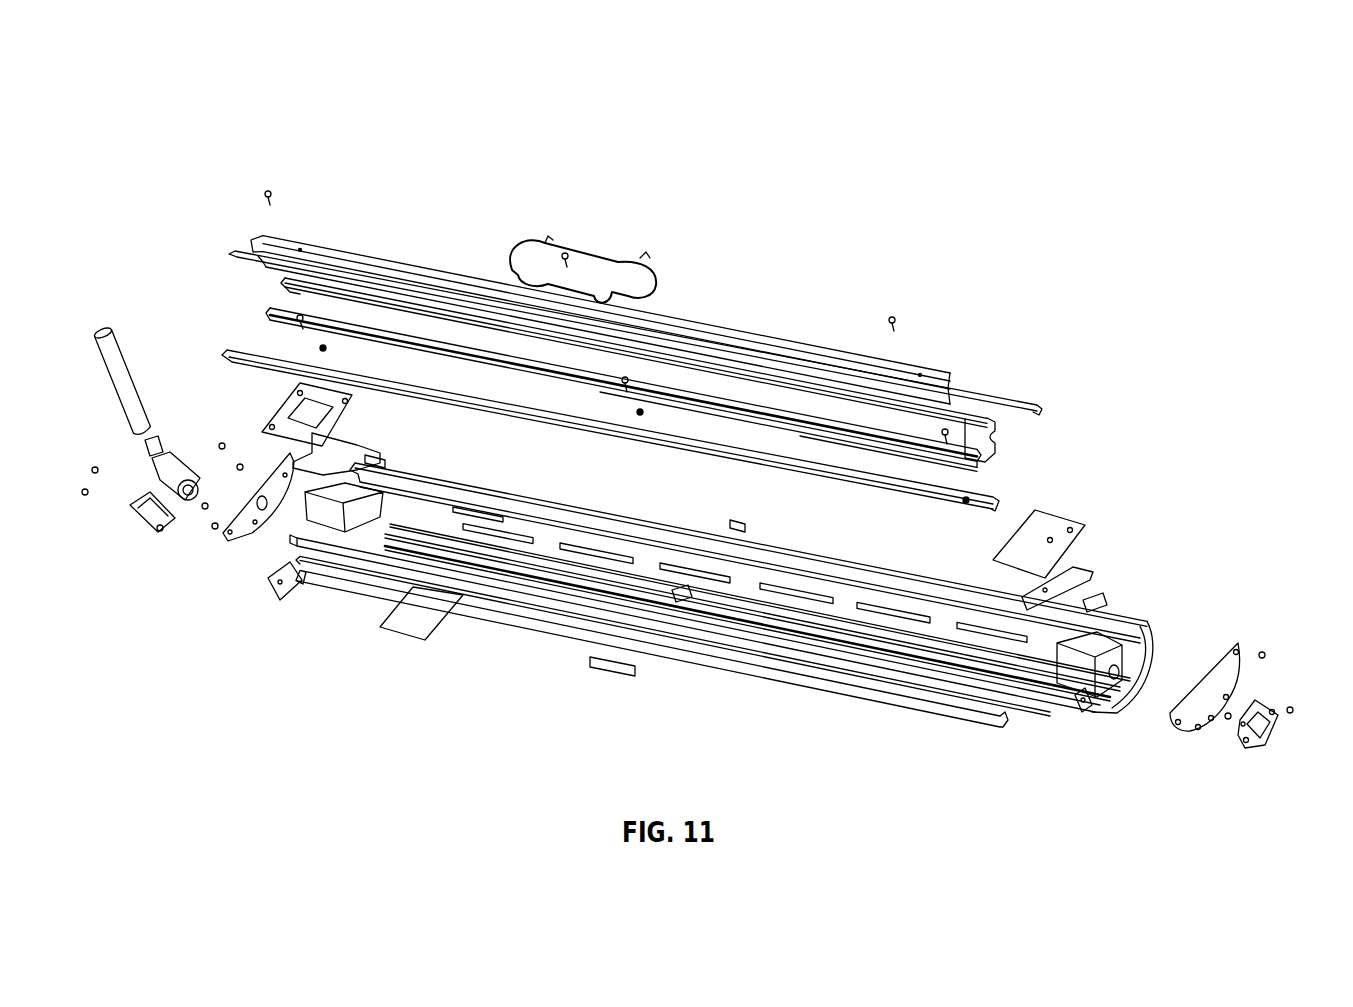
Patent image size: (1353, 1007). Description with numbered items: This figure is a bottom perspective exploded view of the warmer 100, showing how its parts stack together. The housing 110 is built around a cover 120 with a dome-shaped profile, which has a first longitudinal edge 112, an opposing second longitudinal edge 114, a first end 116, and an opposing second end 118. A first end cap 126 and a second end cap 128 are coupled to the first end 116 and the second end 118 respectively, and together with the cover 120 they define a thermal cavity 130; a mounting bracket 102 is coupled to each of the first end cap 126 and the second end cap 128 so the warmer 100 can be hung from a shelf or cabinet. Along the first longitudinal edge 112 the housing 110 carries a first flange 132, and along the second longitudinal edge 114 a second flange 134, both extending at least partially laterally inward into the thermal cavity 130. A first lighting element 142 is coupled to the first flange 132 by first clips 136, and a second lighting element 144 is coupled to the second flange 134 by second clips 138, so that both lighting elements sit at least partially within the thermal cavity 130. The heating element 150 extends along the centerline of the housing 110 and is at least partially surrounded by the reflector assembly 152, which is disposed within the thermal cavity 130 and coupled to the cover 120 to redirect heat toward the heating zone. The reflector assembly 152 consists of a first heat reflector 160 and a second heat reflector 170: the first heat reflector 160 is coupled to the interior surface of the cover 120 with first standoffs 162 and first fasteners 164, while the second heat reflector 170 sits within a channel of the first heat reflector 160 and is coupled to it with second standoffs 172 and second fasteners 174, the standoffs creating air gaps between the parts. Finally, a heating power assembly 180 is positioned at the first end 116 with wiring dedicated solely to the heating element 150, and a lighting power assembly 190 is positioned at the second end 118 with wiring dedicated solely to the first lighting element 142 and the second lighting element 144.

The warmer 100 is at (212, 82).
The mounting bracket 102 is at (142, 518).
The housing 110 is at (689, 606).
The first longitudinal edge 112 is at (689, 606).
The second longitudinal edge 114 is at (560, 616).
The first end 116 is at (205, 555).
The second end 118 is at (1128, 712).
The cover 120 is at (458, 514).
The first end cap 126 is at (240, 546).
The second end cap 128 is at (1232, 664).
The thermal cavity 130 is at (848, 607).
The first flange 132 is at (786, 554).
The second flange 134 is at (790, 630).
The first clips 136 is at (386, 462).
The second clips 138 is at (284, 592).
The first lighting element 142 is at (1041, 405).
The second lighting element 144 is at (1001, 497).
The heating element 150 is at (800, 680).
The reflector assembly 152 is at (623, 349).
The first heat reflector 160 is at (797, 360).
The first standoffs 162 is at (325, 347).
The first fasteners 164 is at (292, 302).
The second heat reflector 170 is at (737, 330).
The second standoffs 172 is at (334, 249).
The second fasteners 174 is at (272, 192).
The heating power assembly 180 is at (270, 402).
The lighting power assembly 190 is at (1152, 655).